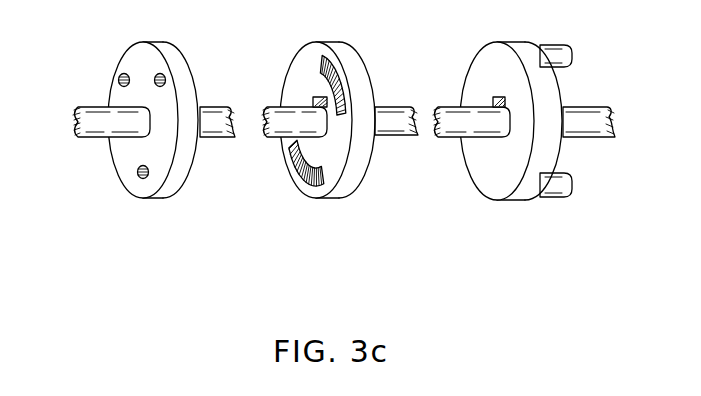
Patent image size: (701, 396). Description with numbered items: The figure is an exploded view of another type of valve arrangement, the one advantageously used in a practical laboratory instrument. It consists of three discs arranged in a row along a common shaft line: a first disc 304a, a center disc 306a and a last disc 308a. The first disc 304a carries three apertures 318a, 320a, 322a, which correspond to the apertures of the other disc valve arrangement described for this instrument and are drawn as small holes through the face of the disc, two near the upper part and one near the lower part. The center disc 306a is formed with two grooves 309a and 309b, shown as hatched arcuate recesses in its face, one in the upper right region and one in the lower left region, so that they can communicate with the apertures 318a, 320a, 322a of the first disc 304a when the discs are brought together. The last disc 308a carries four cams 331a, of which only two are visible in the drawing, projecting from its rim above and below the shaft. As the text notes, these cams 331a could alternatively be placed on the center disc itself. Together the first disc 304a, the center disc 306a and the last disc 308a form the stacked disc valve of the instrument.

The first disc 304a is at (142, 50).
The aperture 318a is at (118, 76).
The aperture 320a is at (166, 77).
The aperture 322a is at (138, 175).
The center disc 306a is at (355, 188).
The groove 309a is at (322, 66).
The groove 309b is at (292, 167).
The last disc 308a is at (533, 195).
The cam 331a is at (573, 53).